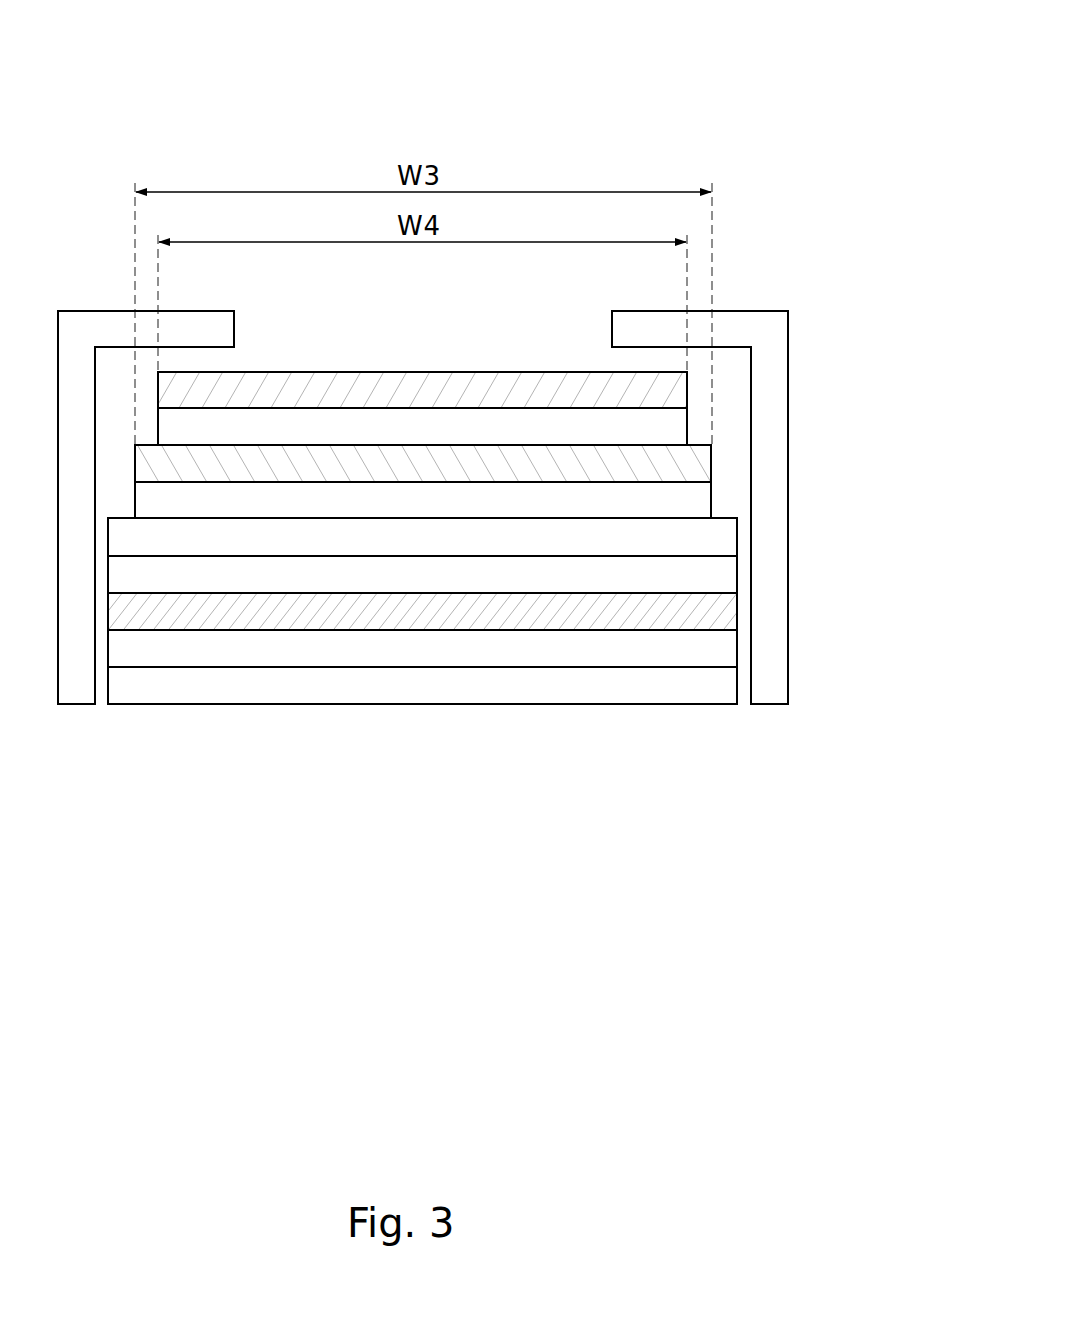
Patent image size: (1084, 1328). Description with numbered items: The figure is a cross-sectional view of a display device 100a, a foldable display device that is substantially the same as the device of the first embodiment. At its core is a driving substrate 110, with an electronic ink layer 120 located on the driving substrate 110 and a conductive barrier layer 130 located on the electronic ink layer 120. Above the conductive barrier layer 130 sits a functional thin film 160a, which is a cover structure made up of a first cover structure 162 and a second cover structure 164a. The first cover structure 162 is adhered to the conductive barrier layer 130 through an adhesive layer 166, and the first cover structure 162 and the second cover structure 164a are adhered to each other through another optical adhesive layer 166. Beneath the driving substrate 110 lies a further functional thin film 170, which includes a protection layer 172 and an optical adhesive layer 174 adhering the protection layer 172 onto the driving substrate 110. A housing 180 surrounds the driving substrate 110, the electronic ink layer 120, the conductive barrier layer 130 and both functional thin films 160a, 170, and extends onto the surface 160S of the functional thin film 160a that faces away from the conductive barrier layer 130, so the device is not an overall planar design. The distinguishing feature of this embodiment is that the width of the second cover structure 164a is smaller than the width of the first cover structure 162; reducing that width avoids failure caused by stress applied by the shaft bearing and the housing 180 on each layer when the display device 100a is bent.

The display device 100a is at (803, 34).
The driving substrate 110 is at (725, 612).
The electronic ink layer 120 is at (725, 575).
The conductive barrier layer 130 is at (725, 540).
The functional thin film 160a is at (537, 441).
The first cover structure 162 is at (697, 465).
The second cover structure 164a is at (673, 390).
The optical adhesive layer 166 is at (695, 503).
The surface of the functional thin film 160S is at (325, 370).
The functional thin film 170 is at (519, 667).
The protection layer 172 is at (725, 688).
The optical adhesive layer 174 is at (725, 650).
The housing 180 is at (234, 323).